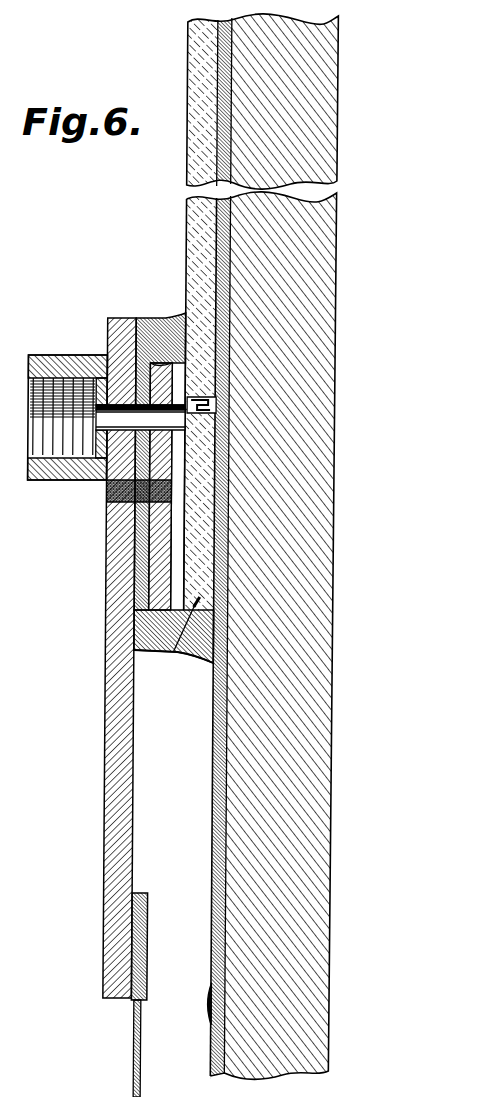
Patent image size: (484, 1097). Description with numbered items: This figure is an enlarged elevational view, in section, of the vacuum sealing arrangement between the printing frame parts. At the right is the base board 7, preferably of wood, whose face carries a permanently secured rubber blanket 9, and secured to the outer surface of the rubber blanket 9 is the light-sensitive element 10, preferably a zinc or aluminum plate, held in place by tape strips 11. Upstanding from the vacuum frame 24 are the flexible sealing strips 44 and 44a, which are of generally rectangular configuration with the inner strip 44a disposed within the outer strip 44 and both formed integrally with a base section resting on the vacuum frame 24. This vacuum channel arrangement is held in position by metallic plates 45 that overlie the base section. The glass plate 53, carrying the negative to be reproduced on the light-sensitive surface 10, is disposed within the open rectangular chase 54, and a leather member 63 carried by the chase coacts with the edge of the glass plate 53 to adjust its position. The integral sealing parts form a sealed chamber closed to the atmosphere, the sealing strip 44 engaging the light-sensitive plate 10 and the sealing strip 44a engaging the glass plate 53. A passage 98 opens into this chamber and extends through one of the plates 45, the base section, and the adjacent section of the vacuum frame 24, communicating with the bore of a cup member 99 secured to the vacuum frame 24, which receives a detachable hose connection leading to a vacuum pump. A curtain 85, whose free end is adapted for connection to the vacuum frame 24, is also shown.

The base board 7 is at (247, 948).
The rubber blanket 9 is at (218, 222).
The light-sensitive element or surface 10 is at (212, 828).
The tape strips 11 is at (207, 1011).
The vacuum frame 24 is at (108, 812).
The sealing strip or member 44 is at (201, 655).
The sealing strip or member 44a is at (170, 316).
The metallic plates 45 is at (155, 582).
The glass plate 53 is at (190, 267).
The chase 54 is at (178, 652).
The member of leather 63 is at (218, 405).
The curtain 85 is at (134, 1058).
The passage 98 is at (123, 431).
The cup member 99 is at (63, 363).